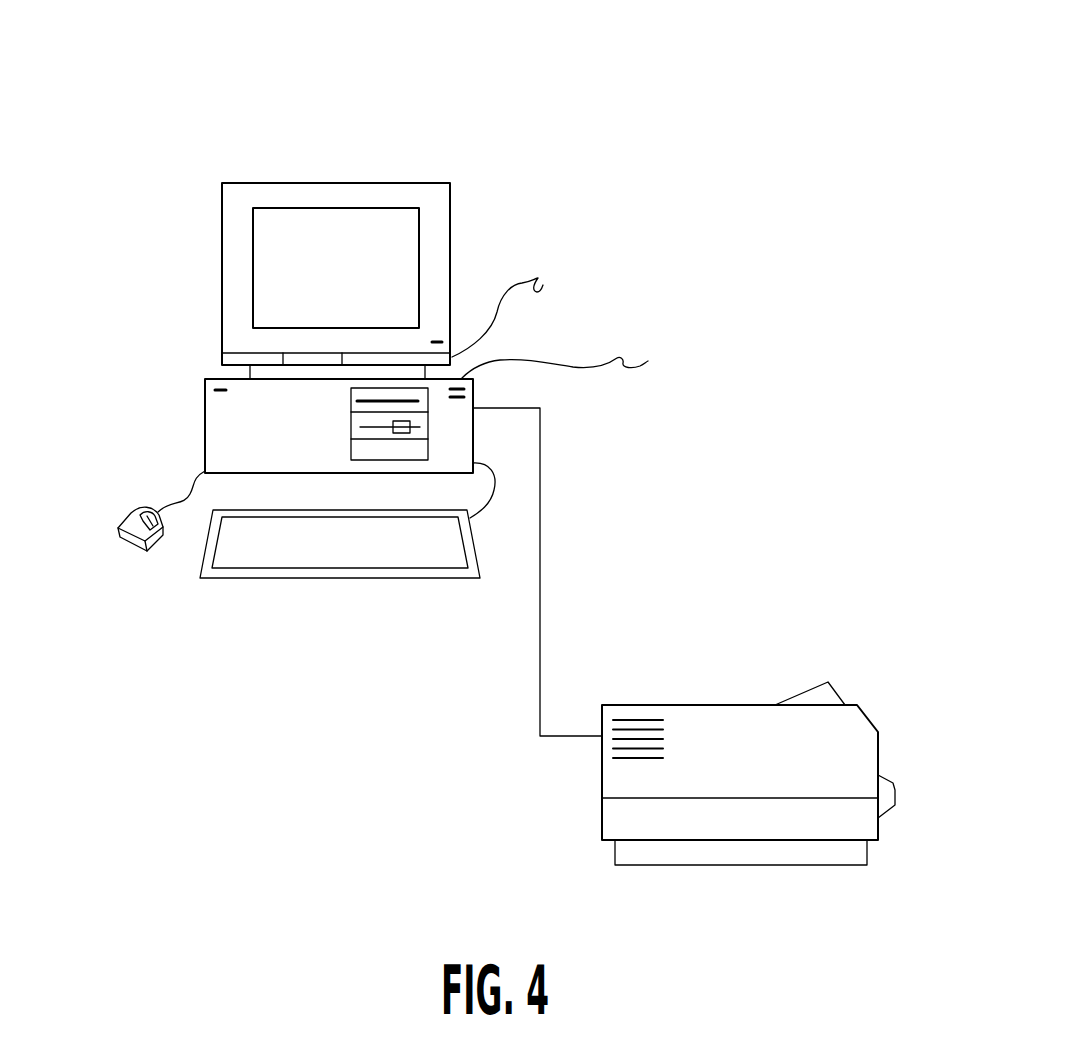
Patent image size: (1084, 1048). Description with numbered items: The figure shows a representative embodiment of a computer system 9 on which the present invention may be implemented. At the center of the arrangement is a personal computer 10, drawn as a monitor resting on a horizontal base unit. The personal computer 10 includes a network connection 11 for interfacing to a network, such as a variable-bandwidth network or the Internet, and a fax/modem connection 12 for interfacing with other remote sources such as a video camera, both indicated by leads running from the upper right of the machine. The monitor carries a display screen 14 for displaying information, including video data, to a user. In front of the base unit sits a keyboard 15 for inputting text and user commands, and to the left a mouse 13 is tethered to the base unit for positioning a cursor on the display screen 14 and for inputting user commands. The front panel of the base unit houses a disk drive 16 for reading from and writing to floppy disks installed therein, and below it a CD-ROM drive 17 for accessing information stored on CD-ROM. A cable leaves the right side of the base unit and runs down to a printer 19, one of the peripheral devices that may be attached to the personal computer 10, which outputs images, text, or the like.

The computer system 9 is at (699, 70).
The personal computer 10 is at (195, 136).
The network connection 11 is at (545, 290).
The fax/modem connection 12 is at (592, 340).
The mouse 13 is at (118, 520).
The display screen 14 is at (290, 221).
The keyboard 15 is at (345, 580).
The disk drive 16 is at (352, 400).
The CD-ROM drive 17 is at (352, 426).
The printer 19 is at (680, 705).